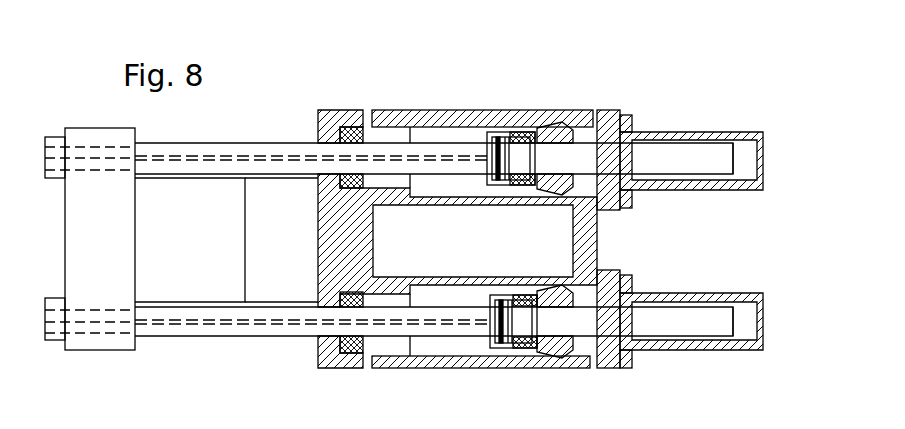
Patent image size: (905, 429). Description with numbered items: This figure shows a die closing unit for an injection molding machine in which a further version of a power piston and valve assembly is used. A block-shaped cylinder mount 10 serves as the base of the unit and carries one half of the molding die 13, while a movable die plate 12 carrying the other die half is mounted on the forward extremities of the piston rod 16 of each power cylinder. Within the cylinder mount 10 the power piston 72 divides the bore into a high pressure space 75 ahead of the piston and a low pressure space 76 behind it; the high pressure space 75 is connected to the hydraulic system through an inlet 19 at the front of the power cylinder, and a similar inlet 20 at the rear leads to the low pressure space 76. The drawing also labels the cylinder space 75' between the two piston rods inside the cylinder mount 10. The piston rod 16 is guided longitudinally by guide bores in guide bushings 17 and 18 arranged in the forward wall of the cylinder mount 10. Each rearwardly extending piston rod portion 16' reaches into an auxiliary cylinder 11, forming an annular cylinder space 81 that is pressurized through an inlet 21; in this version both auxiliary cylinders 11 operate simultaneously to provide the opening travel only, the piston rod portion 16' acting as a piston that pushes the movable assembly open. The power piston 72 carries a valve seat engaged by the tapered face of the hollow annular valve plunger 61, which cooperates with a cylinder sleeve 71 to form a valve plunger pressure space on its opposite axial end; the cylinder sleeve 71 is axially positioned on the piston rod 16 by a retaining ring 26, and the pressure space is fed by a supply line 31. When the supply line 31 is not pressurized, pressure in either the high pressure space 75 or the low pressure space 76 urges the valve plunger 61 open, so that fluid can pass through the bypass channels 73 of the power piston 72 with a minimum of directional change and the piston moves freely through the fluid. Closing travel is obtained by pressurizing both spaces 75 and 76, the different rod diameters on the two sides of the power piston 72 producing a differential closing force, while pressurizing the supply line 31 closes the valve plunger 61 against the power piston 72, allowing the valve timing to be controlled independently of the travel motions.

The cylinder mount 10 is at (358, 238).
The auxiliary cylinder 11 is at (622, 273).
The movable die plate 12 is at (112, 225).
The molding die 13 is at (278, 292).
The piston rod 16 is at (281, 279).
The rearwardly extending piston rod portion 16' is at (691, 306).
The guide bushing 17 is at (320, 138).
The guide bushing 18 is at (317, 338).
The inlet 19 is at (375, 112).
The inlet 20 is at (591, 118).
The inlet 21 is at (620, 113).
The retaining ring 26 is at (485, 338).
The supply line 31 is at (78, 158).
The annular valve plunger 61 is at (522, 348).
The cylinder sleeve 71 is at (502, 347).
The power piston 72 is at (550, 350).
The bypass channel 73 is at (573, 337).
The high pressure space 75 is at (472, 214).
The cylinder chamber 75' is at (439, 212).
The low pressure space 76 is at (578, 195).
The cylinder space 81 is at (748, 310).